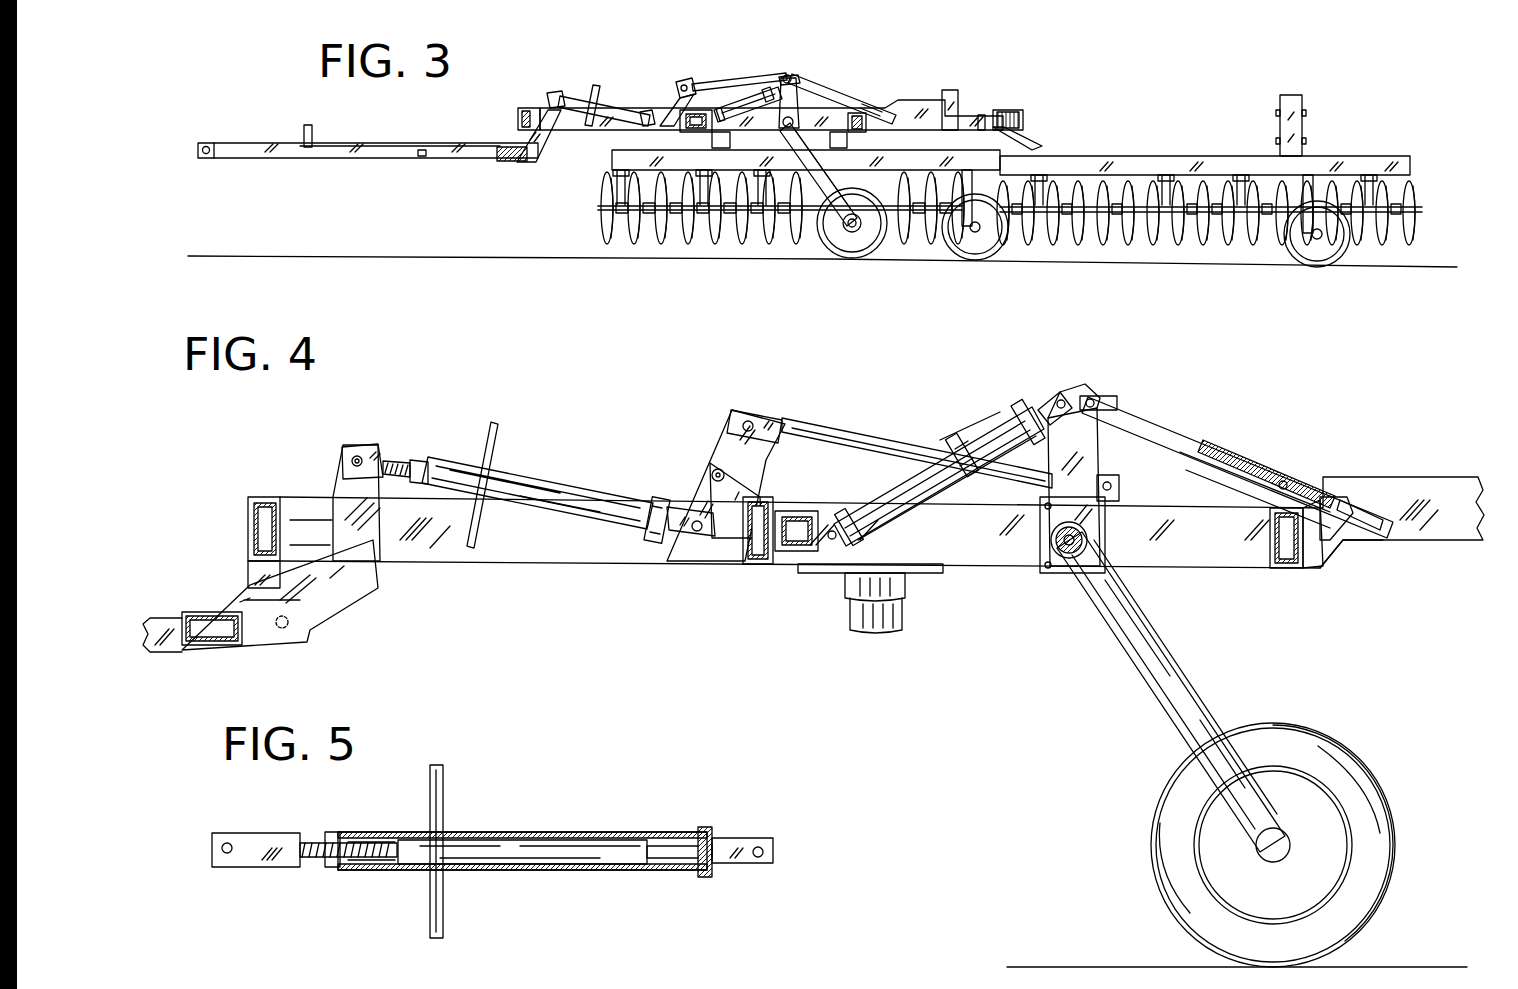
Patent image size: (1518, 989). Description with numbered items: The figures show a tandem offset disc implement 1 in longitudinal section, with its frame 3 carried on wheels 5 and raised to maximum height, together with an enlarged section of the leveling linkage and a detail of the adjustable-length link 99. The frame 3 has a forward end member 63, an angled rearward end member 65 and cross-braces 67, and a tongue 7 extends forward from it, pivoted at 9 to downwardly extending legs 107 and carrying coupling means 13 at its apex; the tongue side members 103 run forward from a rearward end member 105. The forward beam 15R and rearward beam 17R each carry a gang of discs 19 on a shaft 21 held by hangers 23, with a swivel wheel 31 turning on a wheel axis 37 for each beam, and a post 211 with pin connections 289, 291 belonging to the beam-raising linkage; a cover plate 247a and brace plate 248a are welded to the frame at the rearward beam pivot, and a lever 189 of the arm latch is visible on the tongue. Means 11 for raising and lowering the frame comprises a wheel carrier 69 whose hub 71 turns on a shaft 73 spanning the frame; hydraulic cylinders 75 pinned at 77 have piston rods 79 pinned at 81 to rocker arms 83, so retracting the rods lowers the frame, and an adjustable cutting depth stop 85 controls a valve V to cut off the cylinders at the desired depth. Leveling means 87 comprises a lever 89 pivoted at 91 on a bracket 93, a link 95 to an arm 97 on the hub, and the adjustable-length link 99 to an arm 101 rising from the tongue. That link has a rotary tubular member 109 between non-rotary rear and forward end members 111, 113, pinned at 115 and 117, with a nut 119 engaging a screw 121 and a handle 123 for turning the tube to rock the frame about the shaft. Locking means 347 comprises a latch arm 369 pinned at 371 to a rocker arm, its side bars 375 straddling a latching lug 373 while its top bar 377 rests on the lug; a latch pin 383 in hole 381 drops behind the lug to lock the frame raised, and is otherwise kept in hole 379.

In FIG. 3, the tandem offset disc implement 1 is at (512, 100).
In FIG. 3, the frame 3 is at (898, 100).
In FIG. 4, the frame 3 is at (570, 566).
In FIG. 3, the wheels 5 is at (863, 257).
In FIG. 4, the wheels 5 is at (1392, 842).
In FIG. 3, the tongue 7 is at (278, 162).
In FIG. 4, the tongue 7 is at (166, 652).
In FIG. 3, the pivotal connection 9 is at (532, 163).
In FIG. 4, the pivotal connection 9 is at (282, 628).
In FIG. 3, the means for raising and lowering the frame 11 is at (791, 70).
In FIG. 4, the means for raising and lowering the frame 11 is at (1086, 382).
In FIG. 3, the coupling means 13 is at (212, 160).
In FIG. 3, the right forward tool-carrying beam 15R is at (612, 160).
In FIG. 3, the right rearward tool-carrying beam 17R is at (1186, 160).
In FIG. 3, the discs 19 is at (690, 242).
In FIG. 3, the shafts 21 is at (600, 210).
In FIG. 3, the hangers 23 is at (602, 190).
In FIG. 3, the swivel wheel 31 is at (980, 260).
In FIG. 3, the wheel axis 37 is at (975, 228).
In FIG. 3, the forward end member 63 is at (517, 118).
In FIG. 4, the forward end member 63 is at (262, 496).
In FIG. 3, the rearward end member 65 is at (986, 118).
In FIG. 3, the cross-braces 67 is at (679, 128).
In FIG. 4, the cross-braces 67 is at (757, 562).
In FIG. 3, the wheel carrier 69 is at (843, 216).
In FIG. 4, the wheel carrier 69 is at (1170, 650).
In FIG. 3, the hub 71 is at (795, 102).
In FIG. 4, the hub 71 is at (1055, 564).
In FIG. 4, the shaft 73 is at (1090, 540).
In FIG. 3, the hydraulic cylinders 75 is at (728, 104).
In FIG. 4, the hydraulic cylinders 75 is at (905, 478).
In FIG. 4, the cylinder head-end pin connection 77 is at (820, 574).
In FIG. 4, the piston rods 79 is at (990, 442).
In FIG. 4, the piston rod pin connection 81 is at (1045, 410).
In FIG. 3, the rocker arms 83 is at (800, 86).
In FIG. 4, the rocker arms 83 is at (1090, 440).
In FIG. 4, the adjustable cutting depth stop 85 is at (1030, 398).
In FIG. 3, the leveling means 87 is at (670, 80).
In FIG. 4, the leveling means 87 is at (735, 405).
In FIG. 4, the lever 89 is at (722, 430).
In FIG. 4, the lever pivot 91 is at (712, 475).
In FIG. 4, the bracket 93 is at (750, 510).
In FIG. 3, the link 95 is at (768, 80).
In FIG. 4, the link 95 is at (908, 440).
In FIG. 4, the arm 97 is at (1118, 486).
In FIG. 3, the adjustable-length link 99 is at (641, 108).
In FIG. 4, the adjustable-length link 99 is at (550, 484).
In FIG. 5, the adjustable-length link 99 is at (540, 830).
In FIG. 4, the arm 101 is at (334, 485).
In FIG. 3, the tongue side members 103 is at (388, 146).
In FIG. 3, the tongue rearward end member 105 is at (507, 162).
In FIG. 4, the tongue rearward end member 105 is at (215, 647).
In FIG. 4, the legs 107 is at (246, 576).
In FIG. 4, the rotary tubular member 109 is at (520, 514).
In FIG. 5, the rotary tubular member 109 is at (535, 872).
In FIG. 4, the rear end member 111 is at (660, 543).
In FIG. 5, the rear end member 111 is at (728, 866).
In FIG. 4, the forward end member 113 is at (372, 447).
In FIG. 5, the forward end member 113 is at (258, 870).
In FIG. 4, the pin 115 is at (712, 540).
In FIG. 5, the pin 115 is at (772, 850).
In FIG. 4, the pin and rotary connection 117 is at (350, 452).
In FIG. 5, the pin and rotary connection 117 is at (228, 843).
In FIG. 5, the nut 119 is at (345, 796).
In FIG. 4, the screw 121 is at (402, 463).
In FIG. 5, the screw 121 is at (312, 858).
In FIG. 3, the handle 123 is at (596, 86).
In FIG. 4, the handle 123 is at (495, 423).
In FIG. 5, the handle 123 is at (442, 766).
In FIG. 3, the lever 189 is at (306, 124).
In FIG. 3, the post 211 is at (953, 100).
In FIG. 3, the cover plate 247a is at (1025, 112).
In FIG. 3, the brace plate 248a is at (1032, 136).
In FIG. 3, the pin connection 289 is at (1306, 114).
In FIG. 3, the pin connection 291 is at (1306, 141).
In FIG. 4, the automatic locking means 347 is at (1200, 410).
In FIG. 3, the latch arm 369 is at (873, 113).
In FIG. 4, the latch arm 369 is at (1366, 544).
In FIG. 4, the pin connection 371 is at (1098, 400).
In FIG. 4, the latching lug 373 is at (1325, 498).
In FIG. 4, the side bars 375 is at (1222, 462).
In FIG. 4, the top bar 377 is at (1212, 466).
In FIG. 4, the hole 379 is at (1279, 487).
In FIG. 4, the hole 381 is at (1322, 545).
In FIG. 4, the latch pin 383 is at (1322, 500).
In FIG. 4, the valve V is at (950, 428).